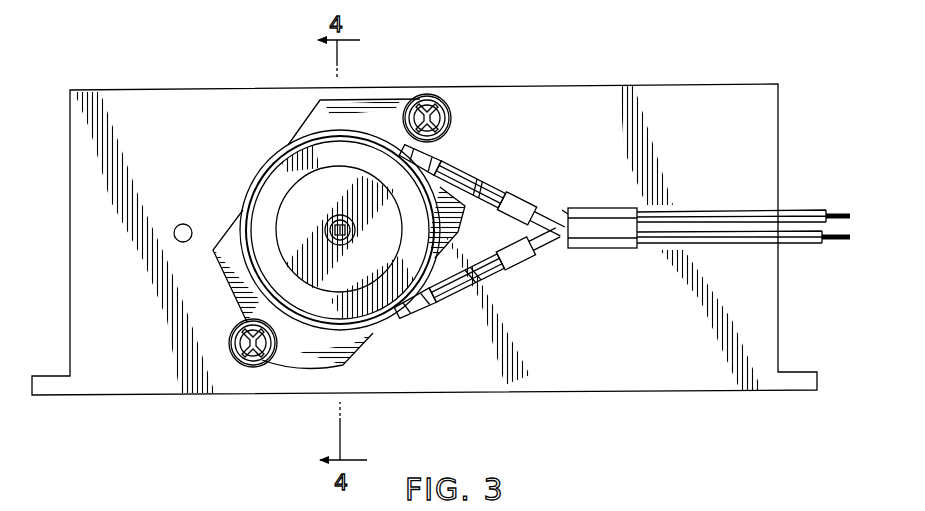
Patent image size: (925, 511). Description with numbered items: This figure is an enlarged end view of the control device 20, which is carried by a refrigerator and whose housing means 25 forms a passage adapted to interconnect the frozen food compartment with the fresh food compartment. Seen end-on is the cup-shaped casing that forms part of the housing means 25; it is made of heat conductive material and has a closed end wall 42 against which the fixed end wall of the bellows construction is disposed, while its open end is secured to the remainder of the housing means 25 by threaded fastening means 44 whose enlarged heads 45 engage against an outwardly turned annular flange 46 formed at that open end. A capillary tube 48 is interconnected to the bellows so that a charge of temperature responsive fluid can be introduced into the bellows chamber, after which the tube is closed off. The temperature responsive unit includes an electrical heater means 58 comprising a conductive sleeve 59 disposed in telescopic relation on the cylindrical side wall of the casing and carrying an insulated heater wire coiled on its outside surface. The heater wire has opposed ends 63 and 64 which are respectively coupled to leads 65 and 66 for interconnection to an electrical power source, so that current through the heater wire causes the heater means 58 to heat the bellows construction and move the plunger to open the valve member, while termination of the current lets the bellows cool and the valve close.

The control device 20 is at (770, 54).
The housing means 25 is at (88, 243).
The closed end wall 42 is at (305, 195).
The threaded fastening means 44 is at (430, 100).
The enlarged heads 45 is at (451, 119).
The outwardly turned annular flange 46 is at (222, 272).
The capillary tube 48 is at (330, 228).
The electrical heater means 58 is at (256, 147).
The conductive sleeve 59 is at (302, 150).
The end of heater wire means 63 is at (405, 322).
The end of heater wire means 64 is at (407, 100).
The lead 65 is at (548, 250).
The lead 66 is at (548, 210).